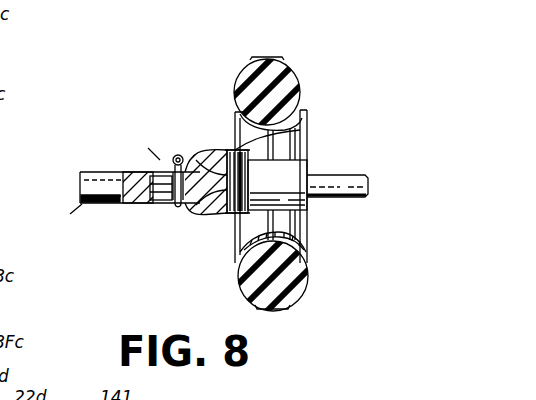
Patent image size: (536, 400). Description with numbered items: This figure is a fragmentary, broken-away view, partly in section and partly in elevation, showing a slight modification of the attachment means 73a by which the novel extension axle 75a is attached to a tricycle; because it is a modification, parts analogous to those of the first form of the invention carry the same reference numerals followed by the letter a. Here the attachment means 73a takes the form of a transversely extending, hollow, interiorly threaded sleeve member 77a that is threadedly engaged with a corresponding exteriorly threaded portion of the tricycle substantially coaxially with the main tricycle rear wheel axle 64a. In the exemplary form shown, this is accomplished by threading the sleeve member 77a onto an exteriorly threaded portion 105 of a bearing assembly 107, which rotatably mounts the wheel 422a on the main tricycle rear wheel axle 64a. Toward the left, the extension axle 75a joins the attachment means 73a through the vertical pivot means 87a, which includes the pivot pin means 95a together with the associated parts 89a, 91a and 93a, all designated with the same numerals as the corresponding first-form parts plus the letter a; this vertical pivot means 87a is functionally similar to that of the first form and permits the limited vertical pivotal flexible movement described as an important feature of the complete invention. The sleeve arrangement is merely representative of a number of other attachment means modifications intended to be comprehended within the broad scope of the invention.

The wheel 422a is at (266, 59).
The sleeve member 77a is at (303, 131).
The bearing assembly 107 is at (277, 185).
The main tricycle rear wheel axle 64a is at (368, 157).
The attachment means 73a is at (208, 138).
The exteriorly threaded portion 105 is at (205, 209).
The rod 93a is at (136, 180).
The nut 89a is at (160, 172).
The block 91a is at (160, 205).
The pivot pin means 95a is at (193, 160).
The vertical pivot means 87a is at (152, 151).
The extension axle 75a is at (72, 214).